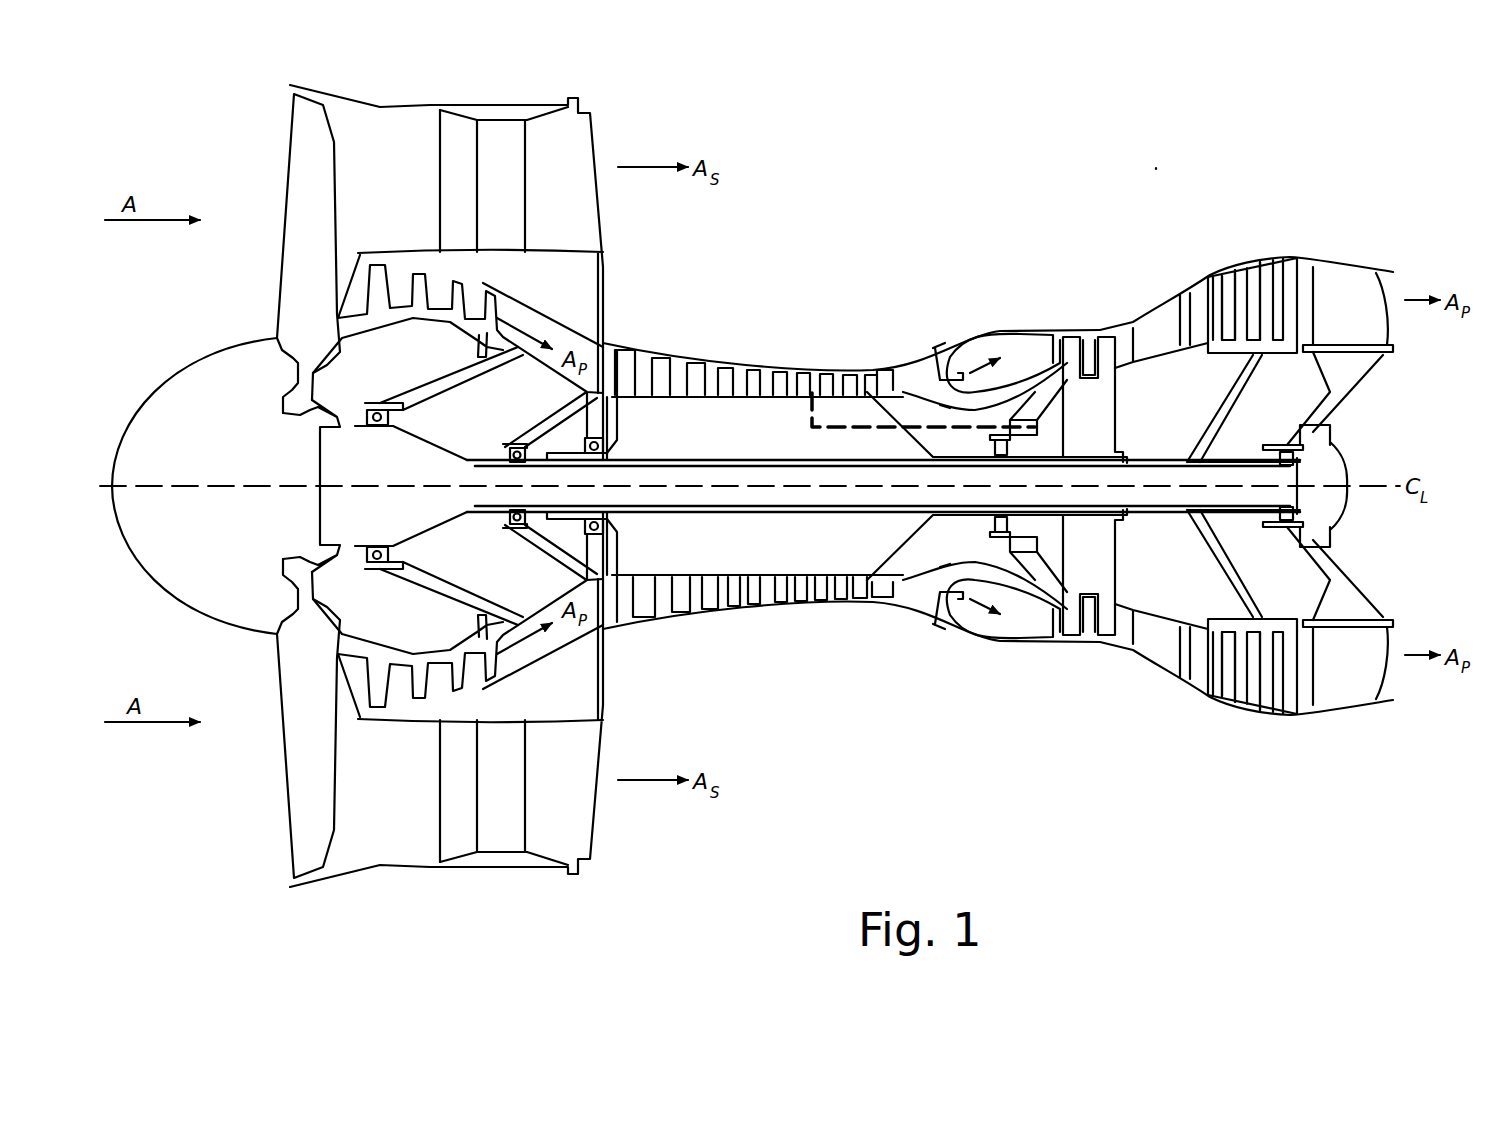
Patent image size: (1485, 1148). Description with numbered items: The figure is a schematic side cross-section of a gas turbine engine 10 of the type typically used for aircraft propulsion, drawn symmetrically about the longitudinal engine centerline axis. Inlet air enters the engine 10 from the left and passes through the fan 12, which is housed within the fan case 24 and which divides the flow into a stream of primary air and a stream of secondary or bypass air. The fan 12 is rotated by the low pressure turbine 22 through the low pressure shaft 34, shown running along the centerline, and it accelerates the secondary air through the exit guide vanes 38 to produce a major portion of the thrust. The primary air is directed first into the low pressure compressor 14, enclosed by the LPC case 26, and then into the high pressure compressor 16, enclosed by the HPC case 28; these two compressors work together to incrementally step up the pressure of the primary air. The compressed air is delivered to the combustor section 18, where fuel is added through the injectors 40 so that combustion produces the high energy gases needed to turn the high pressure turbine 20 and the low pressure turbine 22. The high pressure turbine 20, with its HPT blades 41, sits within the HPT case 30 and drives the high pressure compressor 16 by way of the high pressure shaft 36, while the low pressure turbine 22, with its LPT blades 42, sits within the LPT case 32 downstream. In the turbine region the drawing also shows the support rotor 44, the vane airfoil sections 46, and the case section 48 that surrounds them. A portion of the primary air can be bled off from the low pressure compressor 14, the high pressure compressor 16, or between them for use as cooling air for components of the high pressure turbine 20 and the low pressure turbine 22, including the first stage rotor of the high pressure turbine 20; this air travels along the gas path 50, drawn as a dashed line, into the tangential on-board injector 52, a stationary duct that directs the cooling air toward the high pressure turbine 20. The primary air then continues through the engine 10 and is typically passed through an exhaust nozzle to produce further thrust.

The gas turbine engine 10 is at (1158, 167).
The fan 12 is at (276, 795).
The low pressure compressor (LPC) 14 is at (423, 705).
The high pressure compressor (HPC) 16 is at (800, 624).
The combustor section 18 is at (1000, 332).
The high pressure turbine (HPT) 20 is at (1080, 657).
The low pressure turbine (LPT) 22 is at (1216, 714).
The fan case 24 is at (416, 100).
The LPC case 26 is at (416, 266).
The HPC case 28 is at (769, 370).
The HPT case 30 is at (1125, 322).
The LPT case 32 is at (1298, 262).
The low pressure shaft 34 is at (850, 478).
The high pressure shaft 36 is at (947, 562).
The exit guide vanes 38 is at (515, 210).
The injectors 40 is at (936, 348).
The HPT blades 41 is at (1107, 628).
The LPT blades 42 is at (1232, 300).
The support rotor 44 is at (1218, 408).
The vane airfoil sections 46 is at (1217, 315).
The case section 48 is at (1255, 280).
The gas path 50 is at (808, 427).
The tangential on-board injector (TOBI) 52 is at (1047, 427).